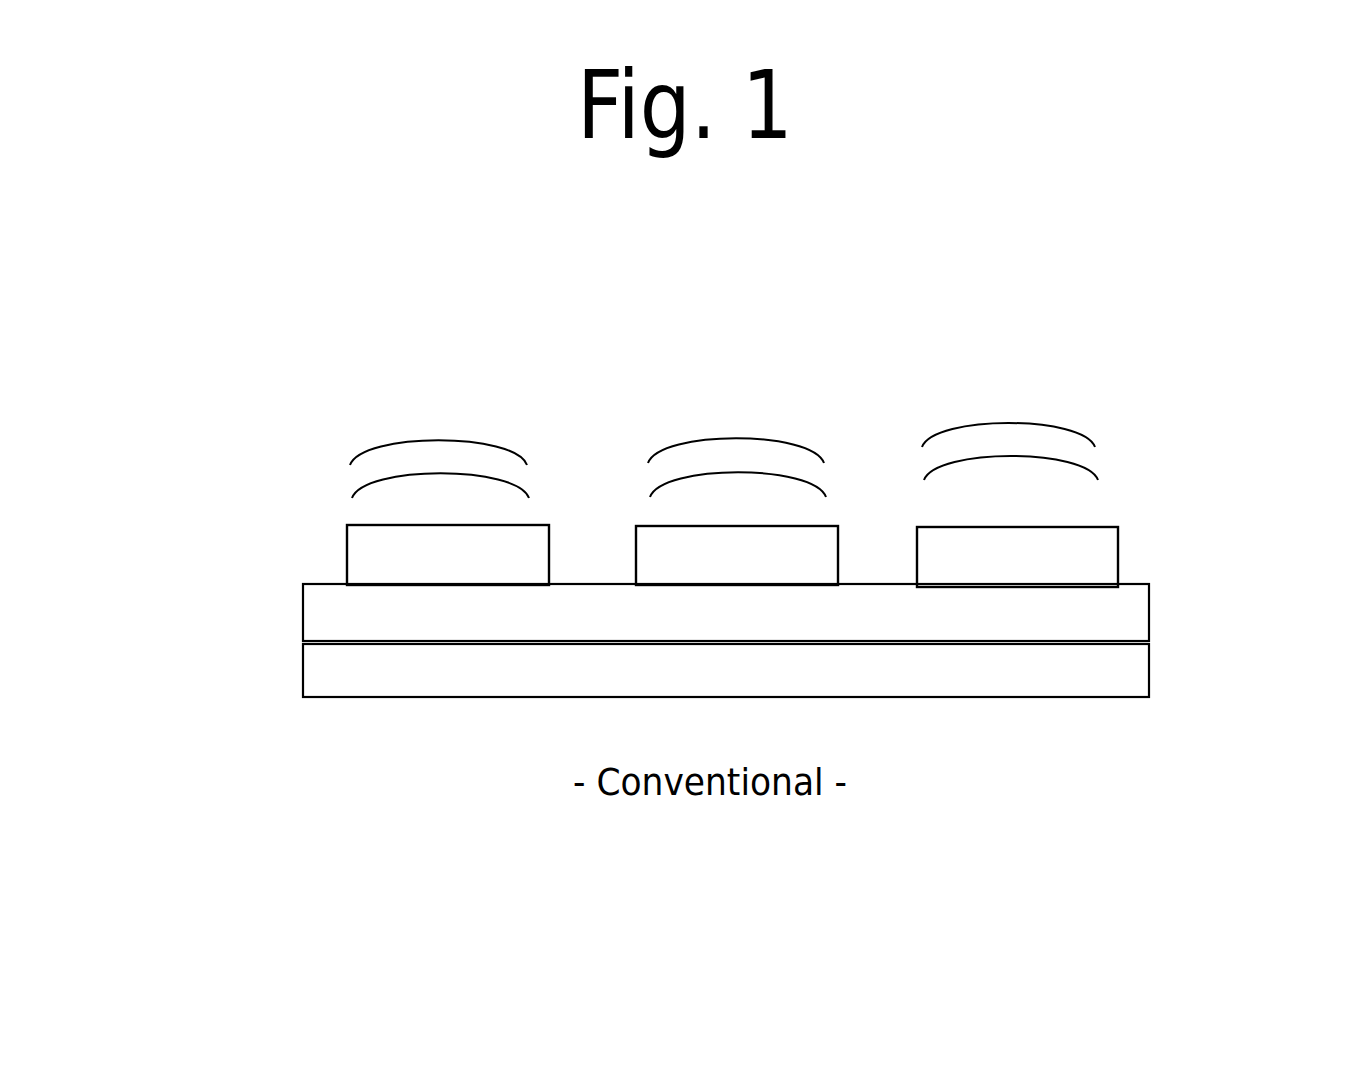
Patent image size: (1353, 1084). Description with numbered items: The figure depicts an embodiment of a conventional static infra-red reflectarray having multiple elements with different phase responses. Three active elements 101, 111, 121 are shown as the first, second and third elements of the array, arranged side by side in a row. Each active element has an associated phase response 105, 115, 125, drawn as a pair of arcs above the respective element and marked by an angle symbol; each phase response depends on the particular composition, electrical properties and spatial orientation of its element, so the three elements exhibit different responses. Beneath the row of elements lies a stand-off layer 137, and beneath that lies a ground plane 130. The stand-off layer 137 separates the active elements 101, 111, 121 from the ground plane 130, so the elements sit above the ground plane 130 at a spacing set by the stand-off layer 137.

The active element 101 is at (347, 530).
The phase response 105 is at (350, 455).
The active element 111 is at (635, 525).
The phase response 115 is at (765, 433).
The active element 121 is at (1113, 538).
The phase response 125 is at (922, 447).
The stand-off layer 137 is at (303, 603).
The ground plane 130 is at (303, 670).